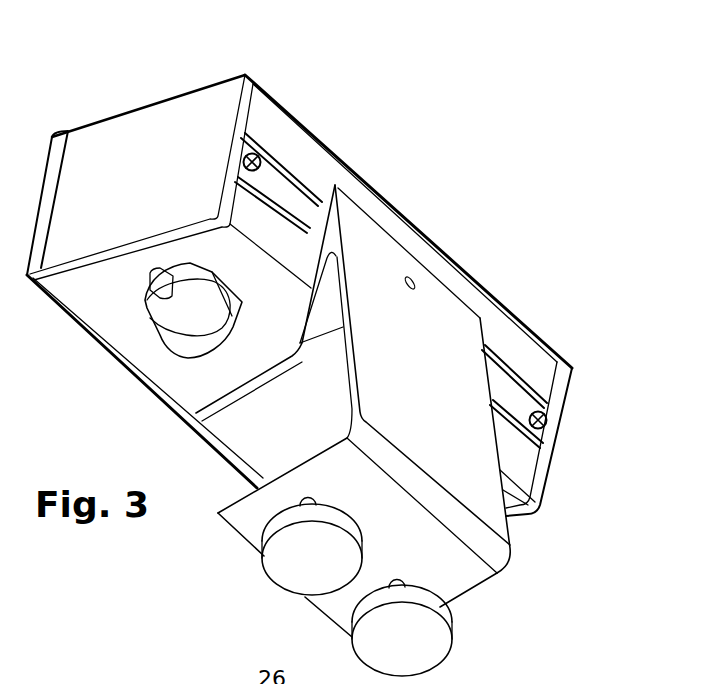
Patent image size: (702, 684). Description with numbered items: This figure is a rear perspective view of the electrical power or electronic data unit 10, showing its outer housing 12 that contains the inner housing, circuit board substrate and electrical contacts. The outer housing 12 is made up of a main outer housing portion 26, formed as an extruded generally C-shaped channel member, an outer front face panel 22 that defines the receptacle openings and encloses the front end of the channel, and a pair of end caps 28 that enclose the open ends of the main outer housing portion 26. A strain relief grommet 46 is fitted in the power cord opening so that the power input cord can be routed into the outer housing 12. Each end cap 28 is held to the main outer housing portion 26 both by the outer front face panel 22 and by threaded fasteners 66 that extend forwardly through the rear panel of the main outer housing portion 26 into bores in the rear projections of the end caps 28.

The electrical power or electronic data unit 10 is at (492, 140).
The outer housing 12 is at (520, 311).
The outer front face panel 22 is at (87, 337).
The main outer housing portion 26 is at (360, 173).
The end cap 28 is at (136, 130).
The strain relief grommet 46 is at (150, 293).
The threaded fastener 66 is at (262, 160).